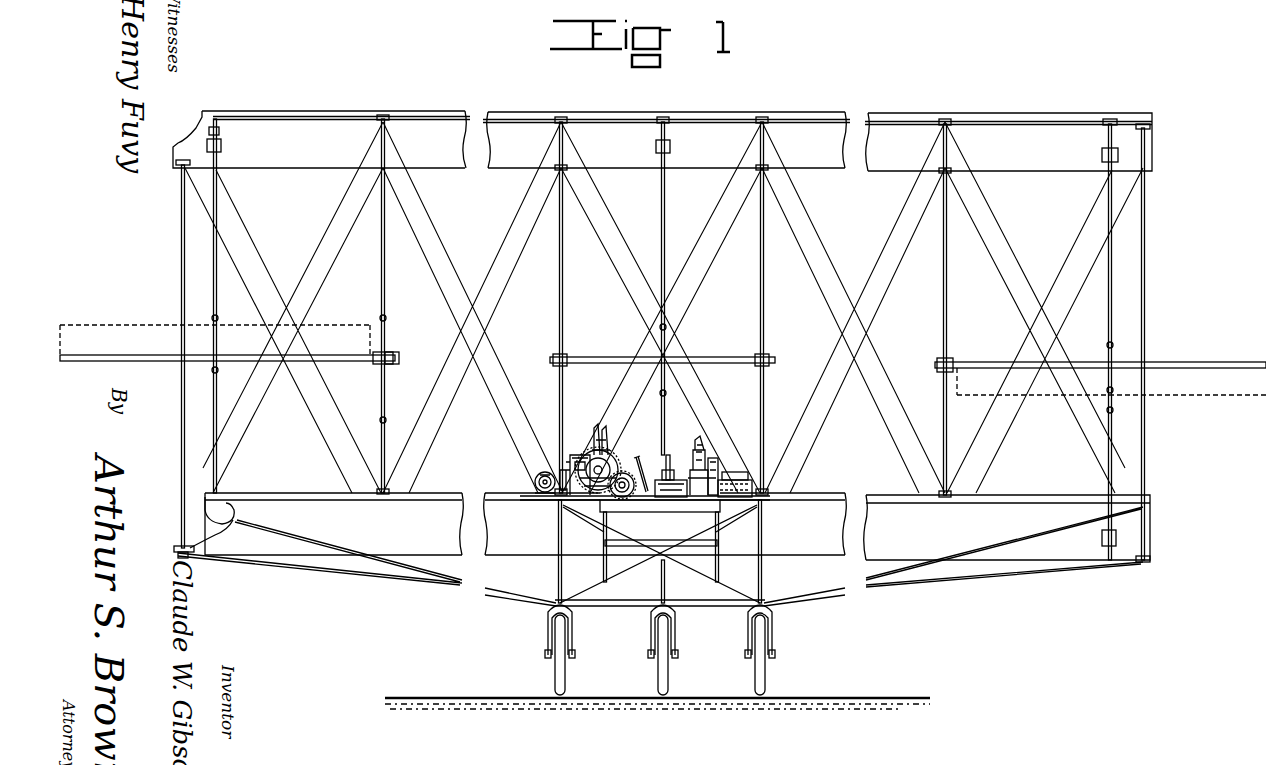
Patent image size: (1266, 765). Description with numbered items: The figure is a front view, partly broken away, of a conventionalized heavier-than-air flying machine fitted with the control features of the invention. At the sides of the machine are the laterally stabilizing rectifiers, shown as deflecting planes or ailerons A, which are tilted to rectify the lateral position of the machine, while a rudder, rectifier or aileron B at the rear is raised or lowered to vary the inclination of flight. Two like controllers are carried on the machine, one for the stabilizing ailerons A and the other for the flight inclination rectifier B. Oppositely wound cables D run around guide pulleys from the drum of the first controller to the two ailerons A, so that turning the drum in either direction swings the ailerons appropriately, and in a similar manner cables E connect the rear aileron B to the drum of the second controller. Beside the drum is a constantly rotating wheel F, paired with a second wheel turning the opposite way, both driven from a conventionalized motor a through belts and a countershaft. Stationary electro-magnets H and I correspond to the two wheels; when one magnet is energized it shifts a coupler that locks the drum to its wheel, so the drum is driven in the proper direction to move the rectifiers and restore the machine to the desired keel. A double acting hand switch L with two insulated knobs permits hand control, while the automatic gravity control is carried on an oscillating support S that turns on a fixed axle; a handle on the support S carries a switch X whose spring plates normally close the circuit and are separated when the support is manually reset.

The ailerons A is at (95, 355).
The rear rudder or aileron B is at (602, 357).
The oppositely wound cables D is at (307, 116).
The cables E is at (663, 214).
The wheel F is at (638, 455).
The electro-magnet H is at (660, 478).
The electro-magnet I is at (720, 490).
The double acting hand switch L is at (570, 460).
The oscillating support S is at (587, 455).
The switch X is at (597, 424).
The motor a is at (535, 482).